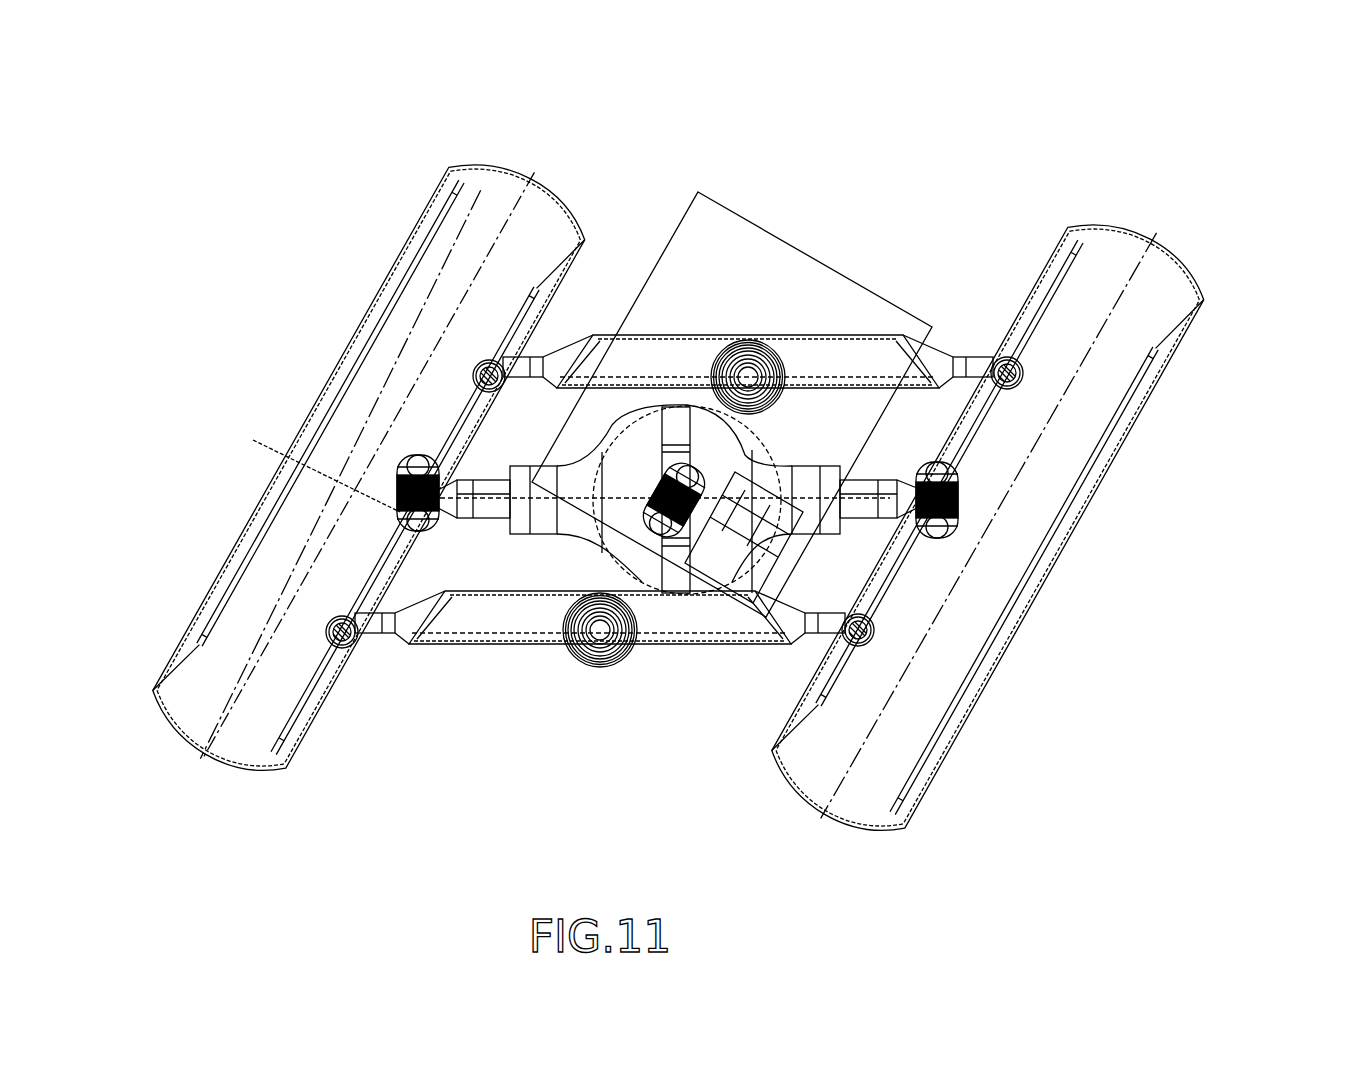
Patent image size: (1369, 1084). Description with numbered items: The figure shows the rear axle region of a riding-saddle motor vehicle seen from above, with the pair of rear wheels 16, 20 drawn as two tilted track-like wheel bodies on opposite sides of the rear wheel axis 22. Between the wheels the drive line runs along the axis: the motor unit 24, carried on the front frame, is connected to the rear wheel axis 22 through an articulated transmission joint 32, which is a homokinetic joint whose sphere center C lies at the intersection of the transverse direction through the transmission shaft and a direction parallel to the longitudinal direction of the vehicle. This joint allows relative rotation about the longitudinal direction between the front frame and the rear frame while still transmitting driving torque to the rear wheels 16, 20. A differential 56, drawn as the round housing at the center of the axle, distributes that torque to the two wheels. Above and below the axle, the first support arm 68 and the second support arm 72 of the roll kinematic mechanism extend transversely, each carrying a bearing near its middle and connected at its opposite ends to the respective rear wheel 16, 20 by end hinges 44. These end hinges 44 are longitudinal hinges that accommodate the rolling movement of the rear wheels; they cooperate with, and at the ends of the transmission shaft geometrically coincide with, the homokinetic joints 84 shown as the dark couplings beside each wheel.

The rear wheel 16 is at (483, 192).
The rear wheel 20 is at (1167, 293).
The rear wheel axis 22 is at (490, 495).
The motor unit 24 is at (745, 280).
The articulated transmission joint 32 is at (738, 462).
The end hinge 44 is at (478, 357).
The differential 56 is at (597, 560).
The first support arm 68 is at (868, 353).
The second support arm 72 is at (712, 615).
The homokinetic joint 84 is at (393, 522).
The sphere center C is at (652, 480).